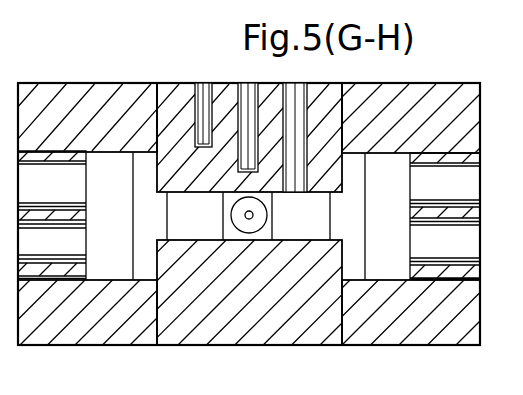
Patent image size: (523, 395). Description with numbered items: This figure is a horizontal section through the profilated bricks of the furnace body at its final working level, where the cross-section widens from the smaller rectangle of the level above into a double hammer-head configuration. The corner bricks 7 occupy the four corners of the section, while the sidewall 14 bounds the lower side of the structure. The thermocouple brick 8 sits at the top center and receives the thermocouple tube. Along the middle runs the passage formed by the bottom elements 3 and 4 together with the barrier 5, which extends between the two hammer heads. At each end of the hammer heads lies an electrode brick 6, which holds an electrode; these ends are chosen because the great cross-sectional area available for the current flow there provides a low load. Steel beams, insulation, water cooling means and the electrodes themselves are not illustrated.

The bottom element 3 is at (117, 233).
The bottom element 4 is at (159, 233).
The barrier 5 is at (207, 233).
The electrode brick 6 is at (71, 200).
The corner brick 7 is at (85, 92).
The thermocouple brick 8 is at (181, 92).
The sidewall 14 is at (189, 334).